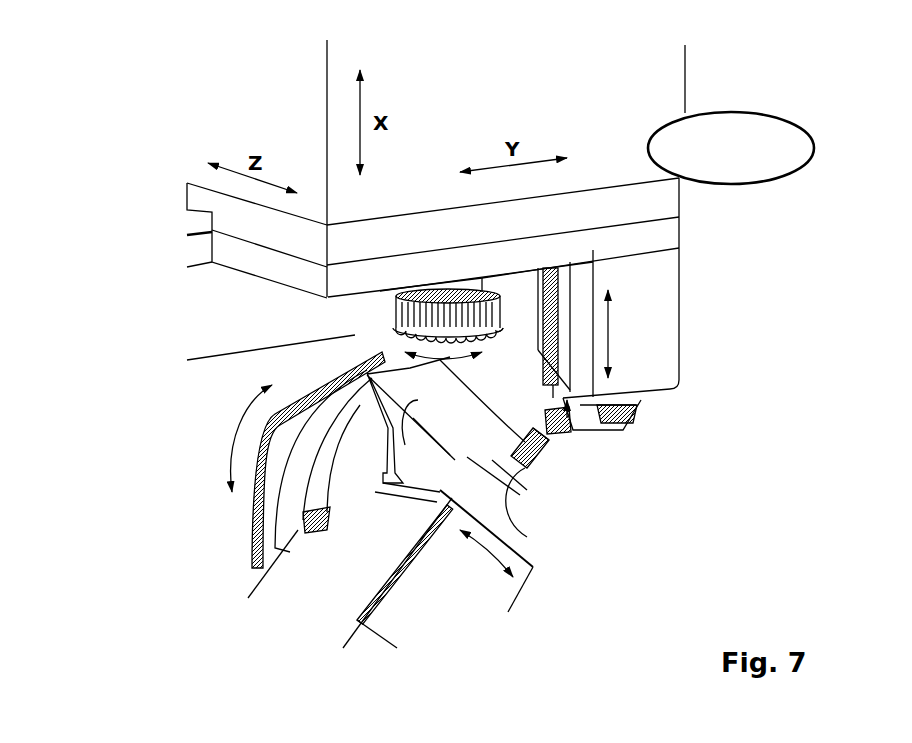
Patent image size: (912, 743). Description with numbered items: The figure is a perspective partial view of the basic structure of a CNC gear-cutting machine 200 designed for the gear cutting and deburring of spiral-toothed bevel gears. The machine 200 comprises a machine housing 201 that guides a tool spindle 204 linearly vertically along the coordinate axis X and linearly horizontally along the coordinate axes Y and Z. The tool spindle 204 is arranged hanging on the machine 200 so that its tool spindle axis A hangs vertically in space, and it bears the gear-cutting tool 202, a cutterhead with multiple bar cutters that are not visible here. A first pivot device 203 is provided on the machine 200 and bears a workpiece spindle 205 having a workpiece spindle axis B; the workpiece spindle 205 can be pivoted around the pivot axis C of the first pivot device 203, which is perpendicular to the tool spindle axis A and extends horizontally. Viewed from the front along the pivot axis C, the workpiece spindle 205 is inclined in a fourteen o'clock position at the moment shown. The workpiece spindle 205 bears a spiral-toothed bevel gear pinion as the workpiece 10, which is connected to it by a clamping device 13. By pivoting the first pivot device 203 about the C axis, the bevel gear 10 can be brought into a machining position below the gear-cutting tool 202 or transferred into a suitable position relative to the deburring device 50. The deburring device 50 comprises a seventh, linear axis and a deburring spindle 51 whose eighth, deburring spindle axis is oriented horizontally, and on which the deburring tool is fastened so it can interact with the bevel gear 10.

The CNC gear-cutting machine 200 is at (86, 60).
The machine housing 201 is at (651, 80).
The gear-cutting tool 202 is at (410, 346).
The first pivot device 203 is at (300, 477).
The tool spindle 204 is at (500, 297).
The workpiece spindle 205 is at (512, 523).
The clamping device 13 is at (527, 467).
The bevel gear workpiece 10 is at (550, 455).
The deburring device 50 is at (625, 442).
The deburring spindle 51 is at (588, 421).